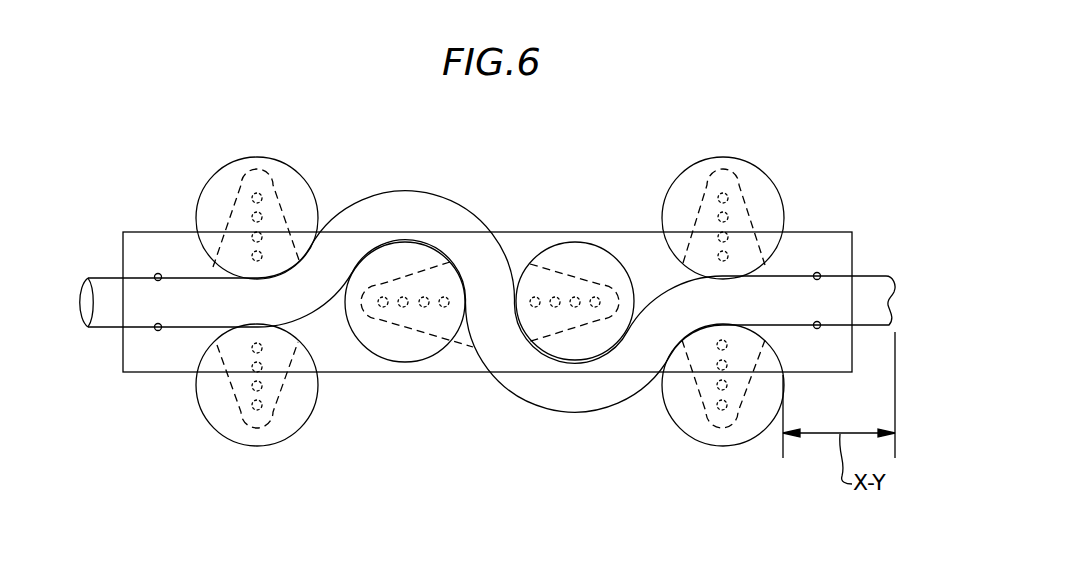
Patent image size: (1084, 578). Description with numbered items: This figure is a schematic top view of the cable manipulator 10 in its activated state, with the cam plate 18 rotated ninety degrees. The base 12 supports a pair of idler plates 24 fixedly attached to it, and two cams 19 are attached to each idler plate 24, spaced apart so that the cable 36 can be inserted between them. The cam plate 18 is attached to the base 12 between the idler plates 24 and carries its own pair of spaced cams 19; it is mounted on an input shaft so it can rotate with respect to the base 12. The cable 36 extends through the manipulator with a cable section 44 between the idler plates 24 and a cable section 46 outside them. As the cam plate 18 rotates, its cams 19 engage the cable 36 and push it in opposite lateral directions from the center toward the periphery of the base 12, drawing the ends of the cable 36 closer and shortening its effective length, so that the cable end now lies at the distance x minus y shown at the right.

The cable manipulator 10 is at (233, 106).
The base 12 is at (399, 372).
The cam plate 18 is at (510, 262).
The cams 19 is at (212, 180).
The idler plates 24 is at (280, 197).
The cable 36 is at (862, 283).
The cable section 44 is at (418, 227).
The cable section 46 is at (151, 316).